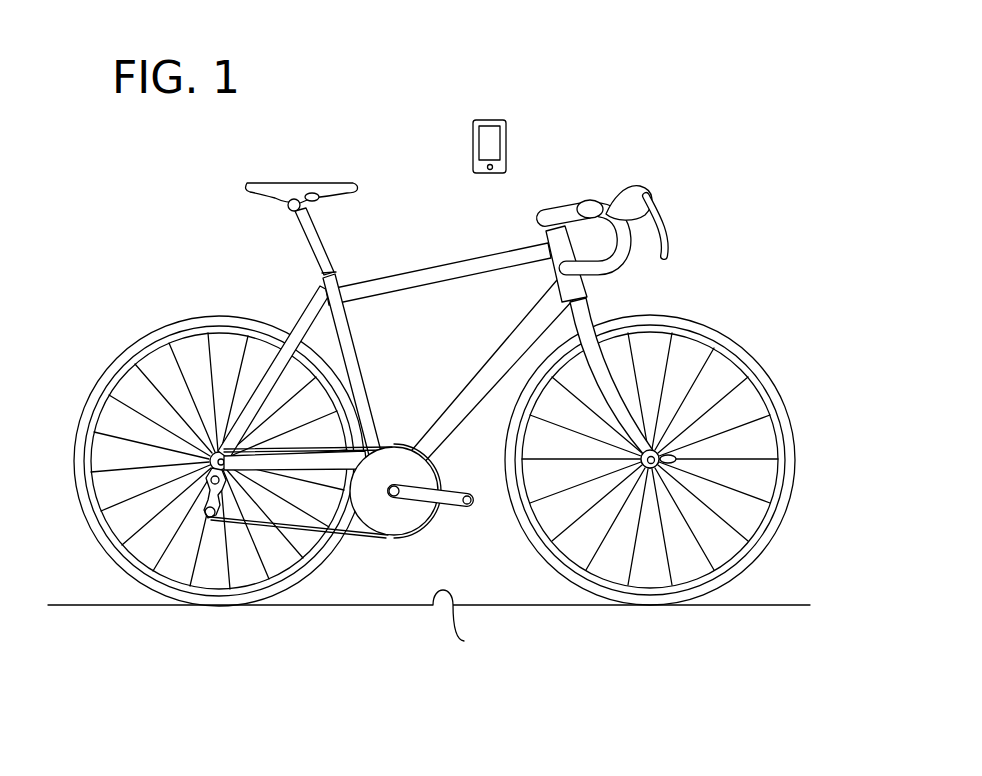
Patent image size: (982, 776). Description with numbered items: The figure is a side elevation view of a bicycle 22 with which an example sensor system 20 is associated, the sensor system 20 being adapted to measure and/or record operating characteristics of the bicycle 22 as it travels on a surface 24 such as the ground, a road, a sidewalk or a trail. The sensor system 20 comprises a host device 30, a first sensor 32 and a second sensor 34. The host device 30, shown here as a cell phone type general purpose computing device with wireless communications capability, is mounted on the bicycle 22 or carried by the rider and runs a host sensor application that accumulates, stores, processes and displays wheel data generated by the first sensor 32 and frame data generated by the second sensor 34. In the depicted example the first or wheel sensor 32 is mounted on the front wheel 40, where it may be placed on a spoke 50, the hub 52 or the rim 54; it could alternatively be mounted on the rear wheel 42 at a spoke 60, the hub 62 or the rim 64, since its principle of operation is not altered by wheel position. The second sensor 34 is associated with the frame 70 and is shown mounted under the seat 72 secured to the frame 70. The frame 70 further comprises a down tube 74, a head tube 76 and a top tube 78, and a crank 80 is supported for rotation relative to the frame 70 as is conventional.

The sensor system 20 is at (549, 92).
The bicycle 22 is at (695, 208).
The surface 24 is at (429, 621).
The host device 30 is at (505, 145).
The first sensor 32 is at (665, 455).
The second sensor 34 is at (319, 200).
The front wheel 40 is at (785, 384).
The rear wheel 42 is at (119, 338).
The spoke 50 is at (750, 500).
The hub 52 is at (670, 462).
The rim 54 is at (743, 549).
The spoke 60 is at (120, 444).
The hub 62 is at (208, 454).
The rim 64 is at (97, 508).
The frame 70 is at (453, 345).
The seat 72 is at (277, 187).
The down tube 74 is at (487, 382).
The head tube 76 is at (590, 292).
The top tube 78 is at (422, 283).
The crank 80 is at (405, 518).